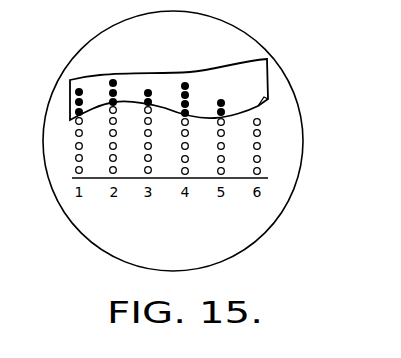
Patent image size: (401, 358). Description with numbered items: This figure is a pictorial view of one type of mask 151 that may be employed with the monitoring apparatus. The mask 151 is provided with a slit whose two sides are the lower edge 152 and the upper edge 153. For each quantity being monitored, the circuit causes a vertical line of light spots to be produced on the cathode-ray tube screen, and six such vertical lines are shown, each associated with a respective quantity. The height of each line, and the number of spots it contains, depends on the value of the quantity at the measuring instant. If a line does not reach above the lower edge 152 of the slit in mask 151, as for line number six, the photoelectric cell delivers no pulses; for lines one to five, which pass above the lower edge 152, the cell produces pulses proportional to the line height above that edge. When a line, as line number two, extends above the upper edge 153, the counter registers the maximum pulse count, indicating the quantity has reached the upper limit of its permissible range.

The mask 151 is at (231, 38).
The lower edge of the slit 152 is at (268, 91).
The upper edge of the slit 153 is at (258, 56).